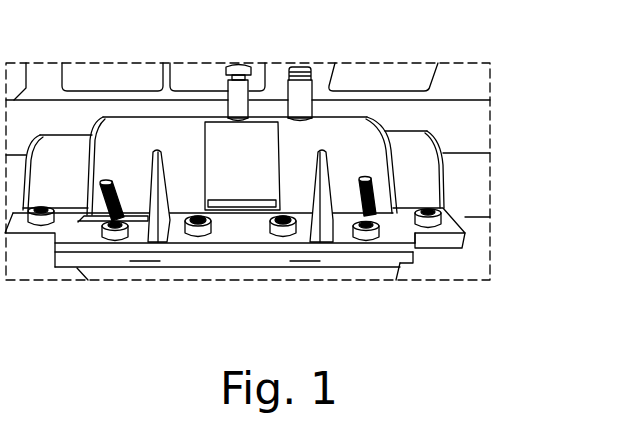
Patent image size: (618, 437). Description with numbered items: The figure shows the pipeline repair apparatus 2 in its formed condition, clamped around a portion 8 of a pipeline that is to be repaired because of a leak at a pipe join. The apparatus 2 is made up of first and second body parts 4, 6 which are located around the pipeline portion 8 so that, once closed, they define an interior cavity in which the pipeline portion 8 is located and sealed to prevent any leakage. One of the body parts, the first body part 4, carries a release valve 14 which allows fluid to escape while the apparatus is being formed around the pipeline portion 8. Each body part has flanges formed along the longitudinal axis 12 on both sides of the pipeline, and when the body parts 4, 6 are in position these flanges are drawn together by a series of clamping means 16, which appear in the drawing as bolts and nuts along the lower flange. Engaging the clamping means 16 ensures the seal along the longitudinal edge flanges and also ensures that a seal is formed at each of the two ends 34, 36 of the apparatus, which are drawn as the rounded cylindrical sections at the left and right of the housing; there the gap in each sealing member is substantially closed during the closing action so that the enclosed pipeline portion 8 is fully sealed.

The apparatus 2 is at (351, 132).
The first body part 4 is at (323, 134).
The second body part 6 is at (340, 266).
The portion of pipeline 8 is at (247, 277).
The longitudinal axis 12 is at (477, 200).
The release valve 14 is at (237, 63).
The clamping means 16 is at (112, 238).
The end of the apparatus 34 is at (76, 135).
The end of the apparatus 36 is at (417, 153).